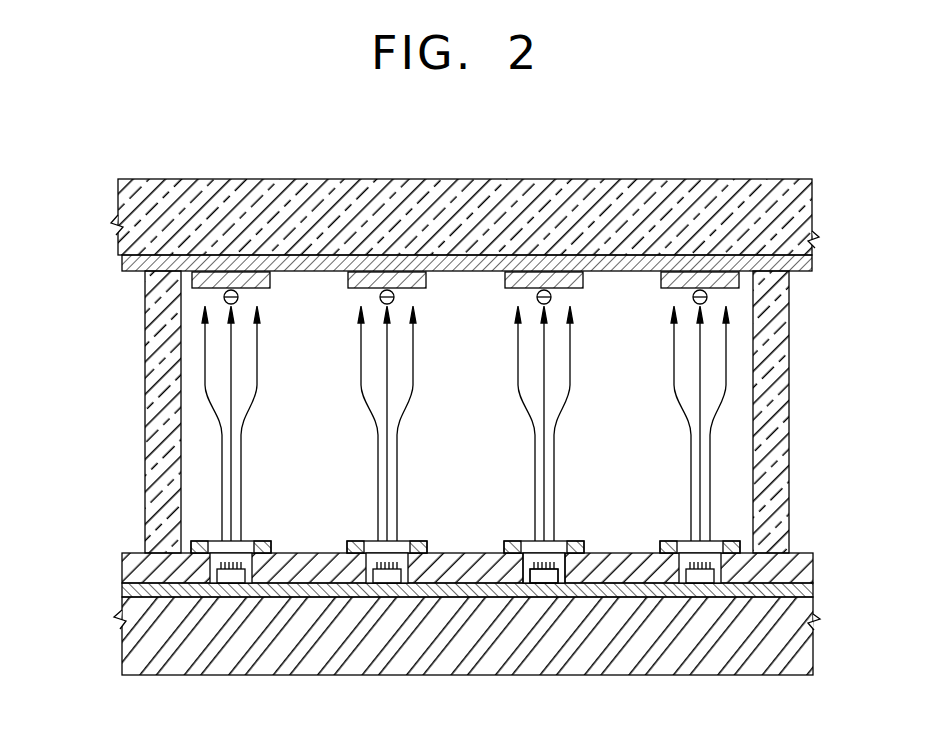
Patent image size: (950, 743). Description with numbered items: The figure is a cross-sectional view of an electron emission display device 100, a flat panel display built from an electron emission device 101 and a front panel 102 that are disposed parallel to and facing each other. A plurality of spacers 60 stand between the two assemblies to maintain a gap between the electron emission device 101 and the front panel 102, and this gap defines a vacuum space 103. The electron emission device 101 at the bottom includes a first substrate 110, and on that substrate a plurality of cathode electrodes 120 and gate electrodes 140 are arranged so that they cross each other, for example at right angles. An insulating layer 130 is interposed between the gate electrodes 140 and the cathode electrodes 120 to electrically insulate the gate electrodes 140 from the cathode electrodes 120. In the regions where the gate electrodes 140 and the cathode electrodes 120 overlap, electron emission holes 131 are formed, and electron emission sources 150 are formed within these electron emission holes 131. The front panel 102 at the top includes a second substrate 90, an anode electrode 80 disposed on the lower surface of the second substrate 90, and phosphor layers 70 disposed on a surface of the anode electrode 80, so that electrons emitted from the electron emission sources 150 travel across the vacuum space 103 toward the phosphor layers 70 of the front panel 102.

The spacers 60 is at (772, 470).
The phosphor layers 70 is at (740, 278).
The anode electrode 80 is at (812, 264).
The second substrate 90 is at (812, 240).
The electron emission display device 100 is at (66, 348).
The electron emission device 101 is at (133, 543).
The front panel 102 is at (131, 281).
The vacuum space 103 is at (283, 477).
The first substrate 110 is at (808, 622).
The cathode electrodes 120 is at (812, 590).
The insulating layer 130 is at (810, 570).
The electron emission holes 131 is at (527, 570).
The gate electrodes 140 is at (662, 555).
The electron emission sources 150 is at (544, 583).